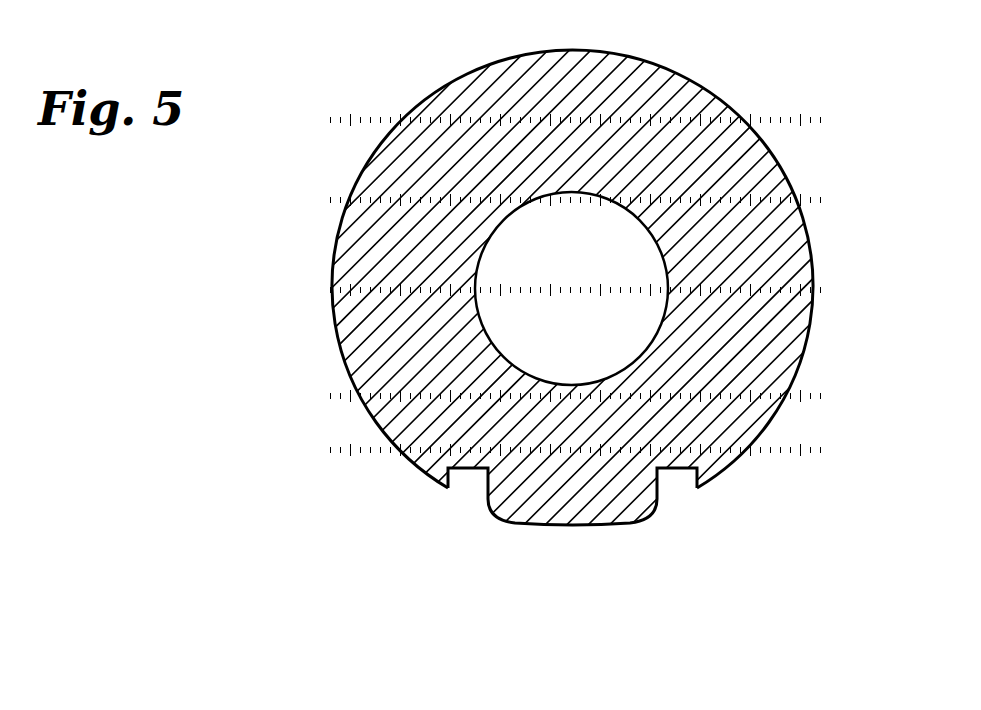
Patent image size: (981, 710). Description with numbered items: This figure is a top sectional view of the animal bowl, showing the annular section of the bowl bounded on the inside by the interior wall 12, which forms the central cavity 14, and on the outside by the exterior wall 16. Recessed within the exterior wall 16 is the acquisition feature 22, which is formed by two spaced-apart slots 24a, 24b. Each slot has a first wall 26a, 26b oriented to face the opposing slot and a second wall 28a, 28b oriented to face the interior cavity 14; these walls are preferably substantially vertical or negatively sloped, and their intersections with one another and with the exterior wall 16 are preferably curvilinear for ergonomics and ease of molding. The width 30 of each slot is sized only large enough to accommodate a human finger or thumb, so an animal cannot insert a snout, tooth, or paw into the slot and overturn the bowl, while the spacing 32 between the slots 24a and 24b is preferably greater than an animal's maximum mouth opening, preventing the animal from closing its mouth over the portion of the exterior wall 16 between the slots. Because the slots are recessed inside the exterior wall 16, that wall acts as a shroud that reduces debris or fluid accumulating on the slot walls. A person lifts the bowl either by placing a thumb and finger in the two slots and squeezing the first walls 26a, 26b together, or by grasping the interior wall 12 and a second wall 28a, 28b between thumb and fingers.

The interior wall 12 is at (505, 217).
The cavity 14 is at (587, 304).
The exterior wall 16 is at (767, 159).
The acquisition feature 22 is at (678, 602).
The slot 24a is at (678, 475).
The slot 24b is at (466, 476).
The first wall 26a is at (672, 485).
The first wall 26b is at (486, 477).
The second wall 28a is at (687, 473).
The second wall 28b is at (463, 472).
The width 30 is at (487, 541).
The spacing 32 is at (578, 540).